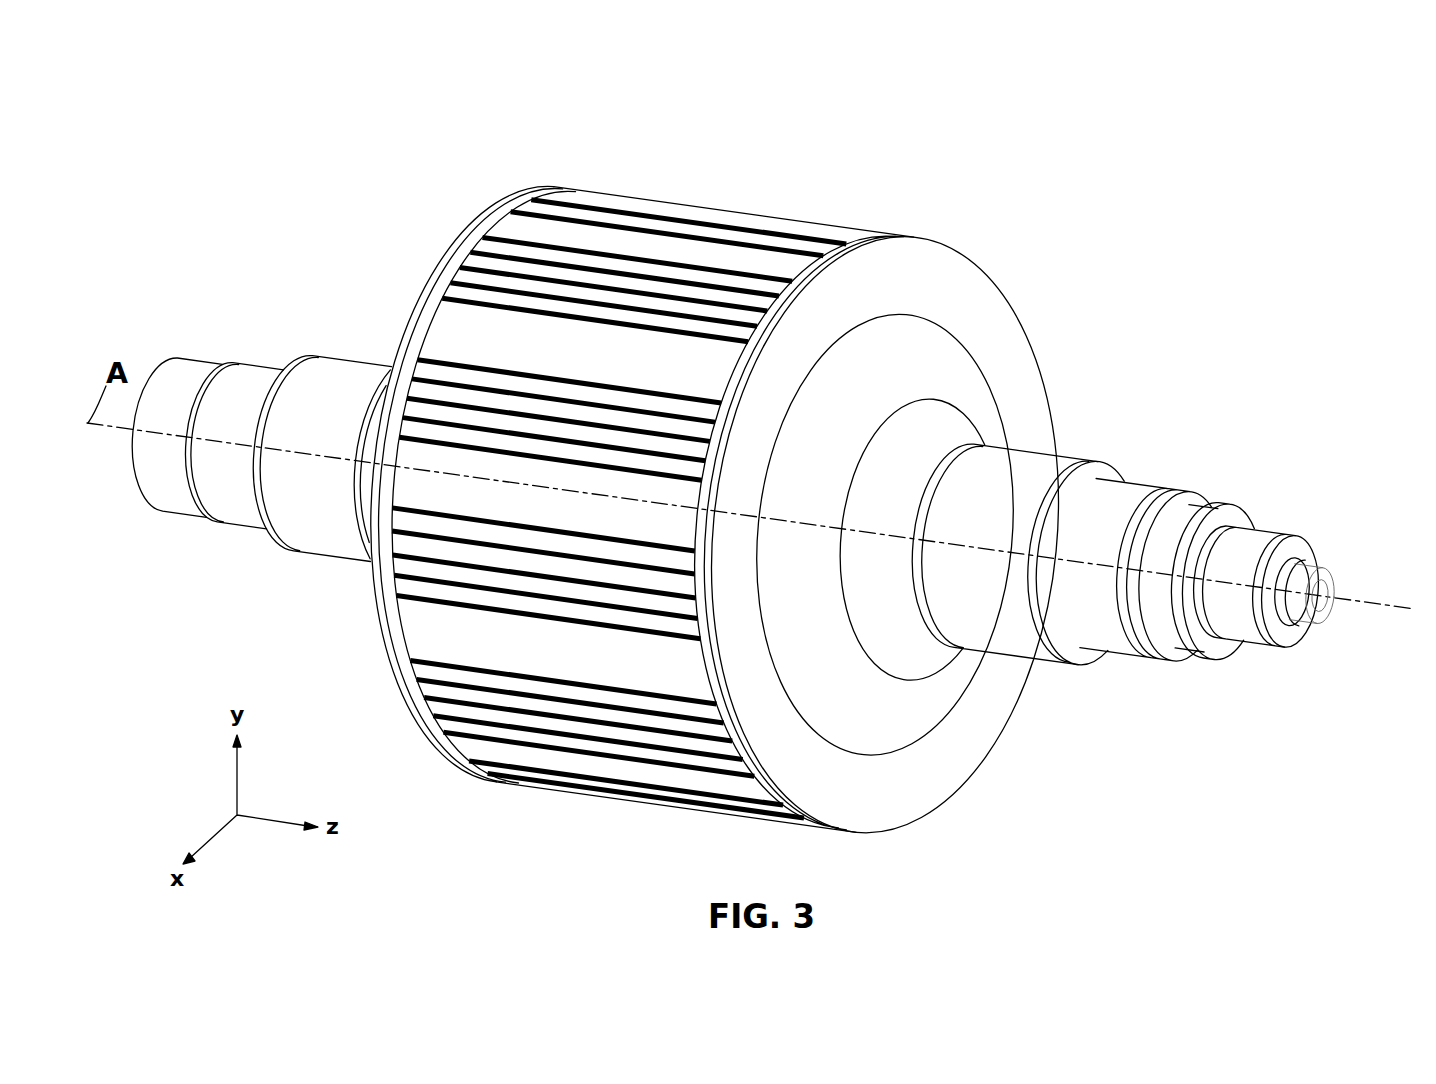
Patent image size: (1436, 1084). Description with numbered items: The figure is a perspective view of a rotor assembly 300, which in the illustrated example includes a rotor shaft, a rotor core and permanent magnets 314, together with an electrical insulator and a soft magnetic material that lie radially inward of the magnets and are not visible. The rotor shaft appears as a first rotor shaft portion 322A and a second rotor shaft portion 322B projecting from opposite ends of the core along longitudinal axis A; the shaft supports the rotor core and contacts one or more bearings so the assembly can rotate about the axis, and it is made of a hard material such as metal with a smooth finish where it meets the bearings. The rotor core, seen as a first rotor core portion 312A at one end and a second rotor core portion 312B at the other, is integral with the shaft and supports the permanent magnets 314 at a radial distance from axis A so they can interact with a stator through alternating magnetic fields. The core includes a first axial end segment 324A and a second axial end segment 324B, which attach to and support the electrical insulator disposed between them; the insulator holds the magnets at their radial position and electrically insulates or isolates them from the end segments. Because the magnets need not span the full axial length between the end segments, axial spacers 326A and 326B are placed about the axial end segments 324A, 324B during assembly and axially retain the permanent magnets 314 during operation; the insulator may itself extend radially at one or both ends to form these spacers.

The rotor assembly 300 is at (303, 112).
The first rotor core portion 312A is at (441, 226).
The second rotor core portion 312B is at (992, 332).
The permanent magnets 314 is at (630, 282).
The first rotor shaft portion 322A is at (252, 388).
The second rotor shaft portion 322B is at (1048, 487).
The first axial end segment 324A is at (212, 290).
The second axial end segment 324B is at (1177, 453).
The axial spacer 326A is at (500, 215).
The axial spacer 326B is at (833, 277).